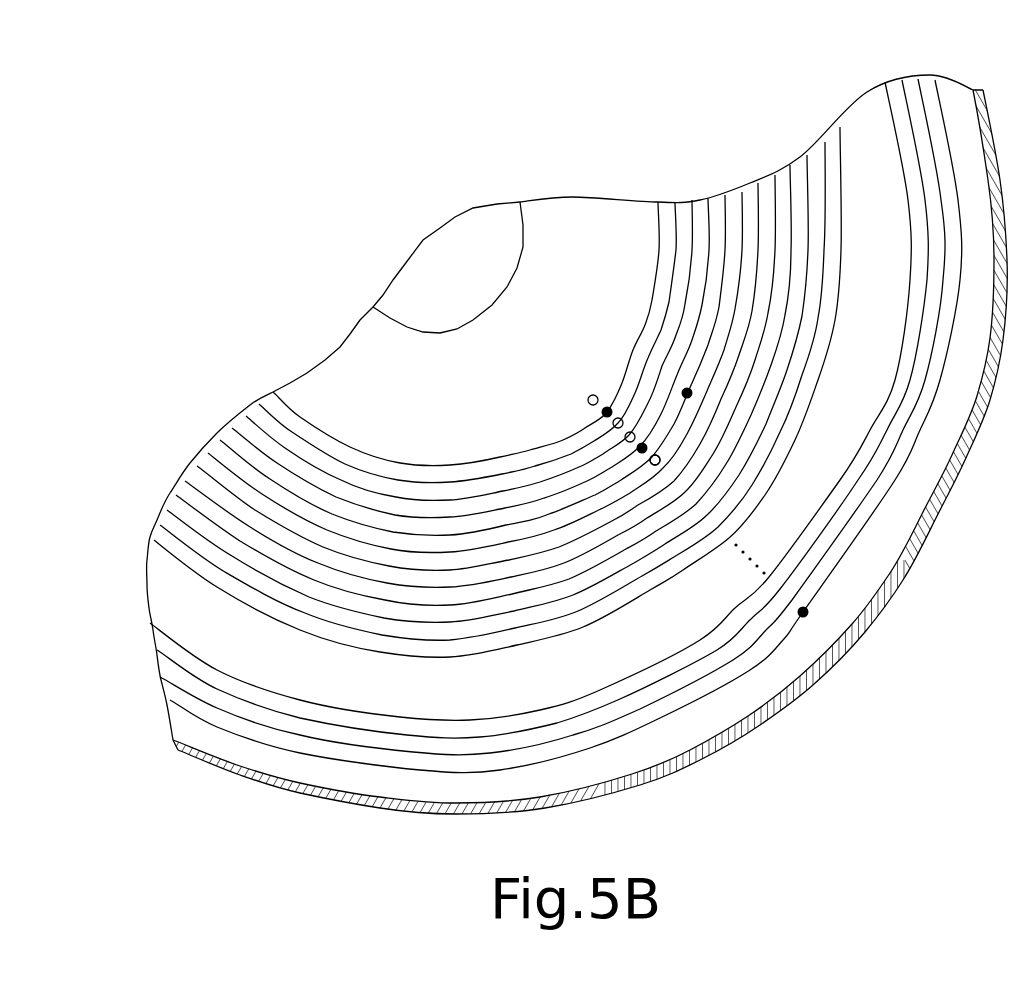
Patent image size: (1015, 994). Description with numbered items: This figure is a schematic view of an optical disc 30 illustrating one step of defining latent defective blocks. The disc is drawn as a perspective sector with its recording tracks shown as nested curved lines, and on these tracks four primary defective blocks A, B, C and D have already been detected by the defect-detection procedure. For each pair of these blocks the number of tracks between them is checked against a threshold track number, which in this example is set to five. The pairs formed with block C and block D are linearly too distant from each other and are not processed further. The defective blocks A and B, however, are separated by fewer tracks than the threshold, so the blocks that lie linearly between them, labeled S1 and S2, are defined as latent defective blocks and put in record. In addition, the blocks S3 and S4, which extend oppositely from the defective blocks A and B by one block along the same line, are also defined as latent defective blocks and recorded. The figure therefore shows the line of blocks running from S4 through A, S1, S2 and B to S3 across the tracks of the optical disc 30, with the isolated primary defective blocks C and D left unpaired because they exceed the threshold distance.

The optical disc 30 is at (860, 117).
The primary defective block A is at (607, 405).
The primary defective block B is at (660, 459).
The primary defective block C is at (808, 614).
The primary defective block D is at (691, 389).
The latent defective block S1 is at (626, 440).
The latent defective block S2 is at (647, 446).
The latent defective block S3 is at (651, 464).
The latent defective block S4 is at (592, 395).